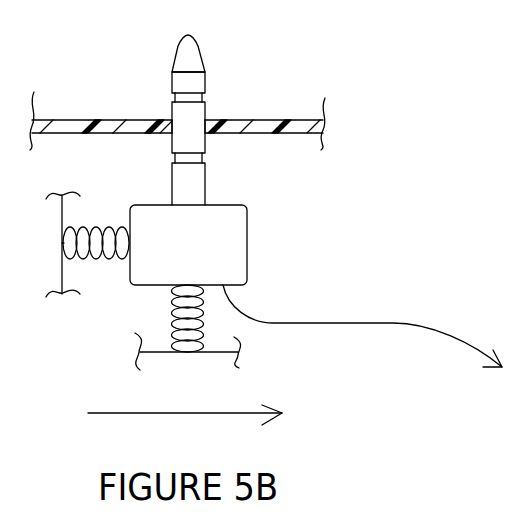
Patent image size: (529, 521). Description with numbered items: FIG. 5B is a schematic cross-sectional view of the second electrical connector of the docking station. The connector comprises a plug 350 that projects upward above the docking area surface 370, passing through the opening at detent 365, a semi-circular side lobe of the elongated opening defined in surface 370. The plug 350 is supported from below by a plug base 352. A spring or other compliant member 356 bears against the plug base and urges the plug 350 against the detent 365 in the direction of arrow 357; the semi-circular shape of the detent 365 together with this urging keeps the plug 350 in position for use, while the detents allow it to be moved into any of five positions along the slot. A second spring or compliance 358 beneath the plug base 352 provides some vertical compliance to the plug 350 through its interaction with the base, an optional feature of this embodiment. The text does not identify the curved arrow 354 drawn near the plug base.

The plug 350 is at (200, 78).
The plug base 352 is at (230, 247).
The actuation direction arrow 354 is at (330, 323).
The spring or other compliant member 356 is at (100, 228).
The arrow 357 is at (128, 413).
The second spring or compliance 358 is at (150, 307).
The detent 365 is at (168, 120).
The docking area surface 370 is at (232, 120).